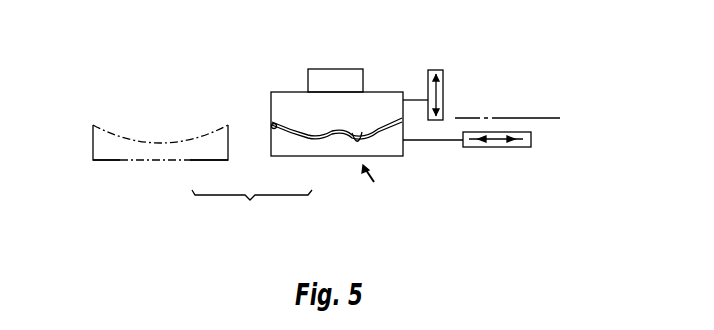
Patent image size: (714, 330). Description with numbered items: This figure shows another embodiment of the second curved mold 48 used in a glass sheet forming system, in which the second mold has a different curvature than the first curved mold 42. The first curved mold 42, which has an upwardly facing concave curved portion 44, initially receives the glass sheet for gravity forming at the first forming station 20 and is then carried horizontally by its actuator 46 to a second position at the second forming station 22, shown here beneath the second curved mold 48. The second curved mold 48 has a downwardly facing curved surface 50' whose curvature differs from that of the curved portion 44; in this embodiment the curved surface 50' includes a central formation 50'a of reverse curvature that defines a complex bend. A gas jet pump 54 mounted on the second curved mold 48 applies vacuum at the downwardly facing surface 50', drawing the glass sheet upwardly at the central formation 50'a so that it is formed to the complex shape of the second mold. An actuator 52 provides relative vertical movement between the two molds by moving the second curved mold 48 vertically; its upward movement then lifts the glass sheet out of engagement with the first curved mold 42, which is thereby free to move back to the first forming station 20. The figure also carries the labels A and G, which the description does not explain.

The first forming station 20 is at (140, 163).
The second forming station 22 is at (375, 195).
The first curved mold 42 is at (112, 160).
The curved portion 44 is at (162, 143).
The actuator 46 is at (517, 148).
The second curved mold 48 is at (271, 92).
The downwardly facing curved surface 50' is at (307, 107).
The central formation 50'a is at (404, 89).
The actuator 52 is at (445, 75).
The gas jet pump 54 is at (363, 82).
The reference axis A is at (543, 117).
The gap G is at (286, 127).